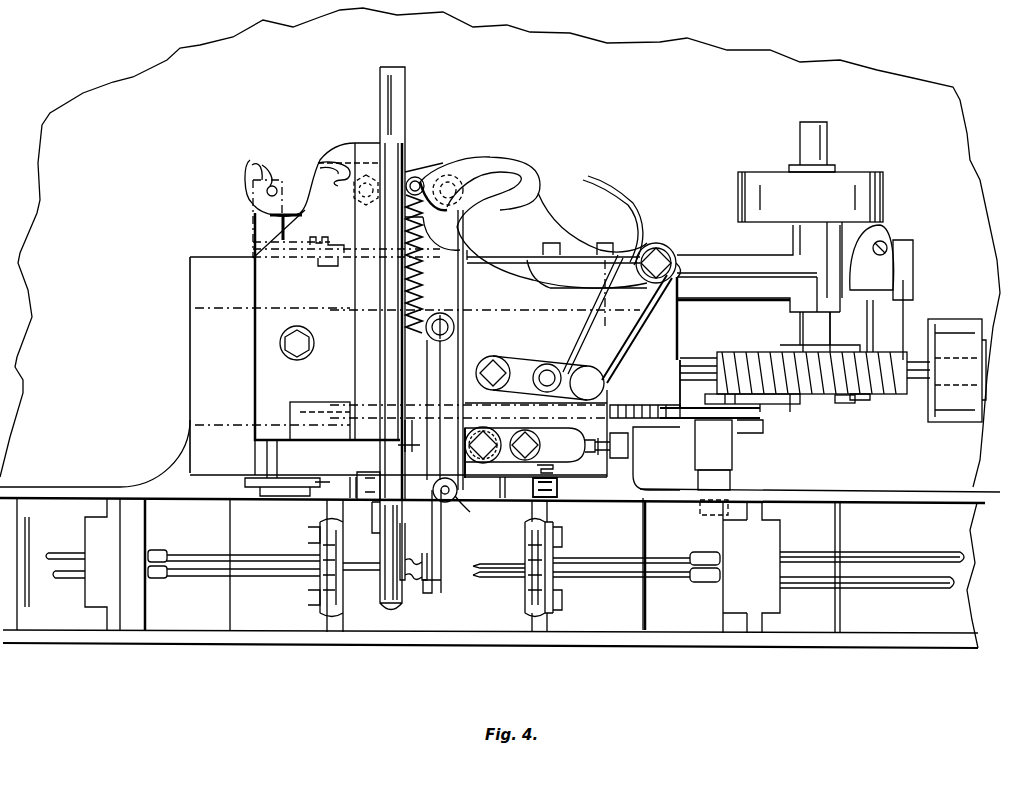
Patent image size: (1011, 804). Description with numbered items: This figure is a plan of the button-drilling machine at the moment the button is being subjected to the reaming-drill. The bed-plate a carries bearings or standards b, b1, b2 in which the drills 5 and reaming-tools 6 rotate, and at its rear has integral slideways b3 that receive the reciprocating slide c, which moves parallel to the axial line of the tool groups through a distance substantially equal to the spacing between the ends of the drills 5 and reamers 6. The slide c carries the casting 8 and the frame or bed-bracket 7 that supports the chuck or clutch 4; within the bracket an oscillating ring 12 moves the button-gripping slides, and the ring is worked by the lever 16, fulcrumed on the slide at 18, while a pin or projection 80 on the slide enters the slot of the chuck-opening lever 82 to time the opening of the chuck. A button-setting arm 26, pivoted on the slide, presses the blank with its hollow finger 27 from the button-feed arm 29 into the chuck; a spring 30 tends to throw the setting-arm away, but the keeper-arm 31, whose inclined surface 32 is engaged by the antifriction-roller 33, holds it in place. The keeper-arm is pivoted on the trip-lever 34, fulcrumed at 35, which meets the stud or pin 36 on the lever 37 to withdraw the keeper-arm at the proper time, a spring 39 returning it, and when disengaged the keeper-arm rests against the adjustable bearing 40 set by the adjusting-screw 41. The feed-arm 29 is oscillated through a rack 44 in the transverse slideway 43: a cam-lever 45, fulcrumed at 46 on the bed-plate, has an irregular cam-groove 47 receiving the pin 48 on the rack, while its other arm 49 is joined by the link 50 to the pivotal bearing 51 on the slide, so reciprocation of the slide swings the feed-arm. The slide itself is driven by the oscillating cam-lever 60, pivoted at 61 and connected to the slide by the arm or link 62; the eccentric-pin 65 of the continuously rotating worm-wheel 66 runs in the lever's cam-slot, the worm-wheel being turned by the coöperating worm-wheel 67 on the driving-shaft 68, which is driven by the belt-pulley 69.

The chuck or clutch 4 is at (390, 616).
The drills 5 is at (605, 570).
The reaming-tools 6 is at (272, 562).
The frame or bed-bracket 7 is at (392, 508).
The casting 8 is at (327, 309).
The oscillating ring 12 is at (378, 588).
The lever 16 is at (505, 483).
The fulcrum of lever 18 is at (557, 492).
The button-setting arm 26 is at (441, 535).
The hollow finger 27 is at (414, 588).
The button-feed arm 29 is at (405, 410).
The spring 30 is at (430, 360).
The keeper-arm 31 is at (465, 337).
The wedge-like or inclined surface 32 is at (467, 490).
The antifriction-roller 33 is at (450, 503).
The trip-lever 34 is at (413, 168).
The fulcrum of trip-lever 35 is at (362, 165).
The stud or pin 36 is at (270, 186).
The lever 37 is at (278, 183).
The spring 39 is at (432, 316).
The adjustable bearing 40 is at (478, 420).
The adjusting-screw 41 is at (632, 446).
The transverse slideway 43 is at (398, 152).
The rack 44 is at (410, 118).
The cam-lever 45 is at (552, 232).
The fulcrum of cam-lever 46 is at (662, 245).
The cam-groove 47 is at (495, 178).
The pin 48 is at (425, 235).
The arm of cam-lever 49 is at (617, 319).
The link 50 is at (548, 378).
The pivotal bearing 51 is at (500, 365).
The oscillating cam-lever 60 is at (732, 440).
The fulcrum of cam-lever 61 is at (730, 480).
The arm or link 62 is at (678, 405).
The eccentric-pin 65 is at (805, 410).
The worm-wheel 66 is at (885, 397).
The coöperating worm-wheel 67 is at (860, 400).
The driving-shaft 68 is at (917, 355).
The belt-pulley 69 is at (955, 315).
The pin or projection 80 is at (265, 458).
The chuck-opening lever 82 is at (248, 482).
The bed-plate a is at (95, 453).
The bearing or standard b is at (432, 565).
The bearing or standard b1 is at (543, 613).
The bearing or standard b2 is at (333, 613).
The slideways b3 is at (438, 317).
The reciprocating slide c is at (398, 366).